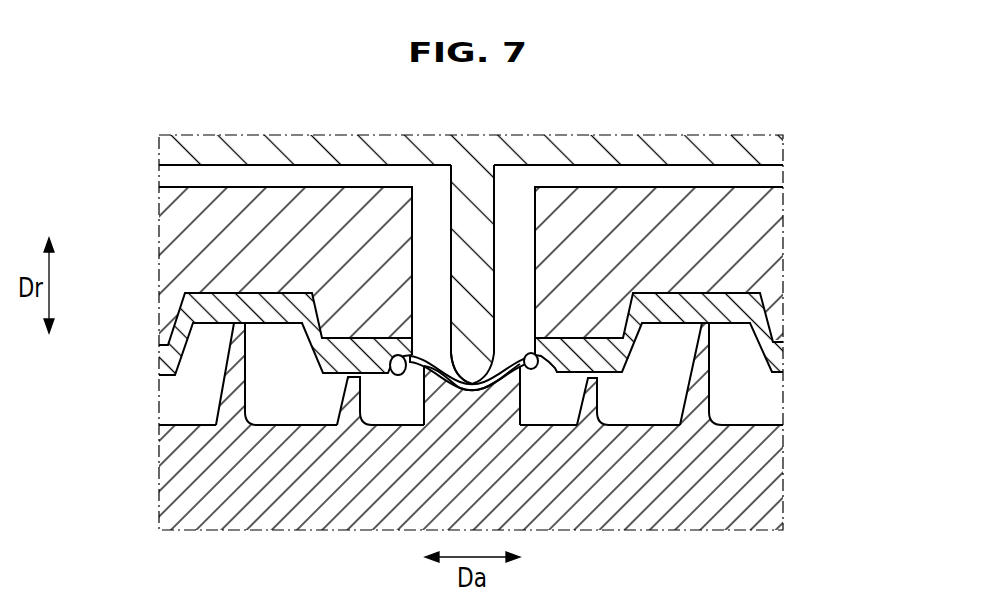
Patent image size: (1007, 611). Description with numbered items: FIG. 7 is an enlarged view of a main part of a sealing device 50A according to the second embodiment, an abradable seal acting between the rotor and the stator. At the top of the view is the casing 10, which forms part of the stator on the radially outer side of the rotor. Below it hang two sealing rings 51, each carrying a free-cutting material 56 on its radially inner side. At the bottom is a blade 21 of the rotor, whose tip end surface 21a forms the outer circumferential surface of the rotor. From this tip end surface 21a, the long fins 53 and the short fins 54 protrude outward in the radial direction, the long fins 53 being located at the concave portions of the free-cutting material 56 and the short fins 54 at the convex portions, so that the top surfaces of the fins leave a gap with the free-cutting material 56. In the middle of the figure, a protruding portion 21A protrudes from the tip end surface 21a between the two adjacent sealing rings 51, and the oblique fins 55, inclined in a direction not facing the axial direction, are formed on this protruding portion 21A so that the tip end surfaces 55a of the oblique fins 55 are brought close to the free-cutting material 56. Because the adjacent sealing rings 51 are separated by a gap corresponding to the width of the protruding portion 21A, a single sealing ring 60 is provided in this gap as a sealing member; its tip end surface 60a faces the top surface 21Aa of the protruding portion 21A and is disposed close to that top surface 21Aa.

The sealing device 50A is at (724, 124).
The casing 10 is at (760, 147).
The single sealing ring 60 is at (471, 186).
The tip end surface of single sealing ring 60a is at (462, 366).
The sealing ring 51 is at (173, 255).
The free-cutting material 56 is at (172, 358).
The blade 21 is at (757, 445).
The tip end surface of blade 21a is at (755, 422).
The protruding portion 21A is at (489, 395).
The top surface of protruding portion 21Aa is at (458, 392).
The long fin 53 is at (355, 395).
The short fin 54 is at (229, 392).
The oblique fin 55 is at (413, 362).
The tip end surface of oblique fin 55a is at (398, 375).